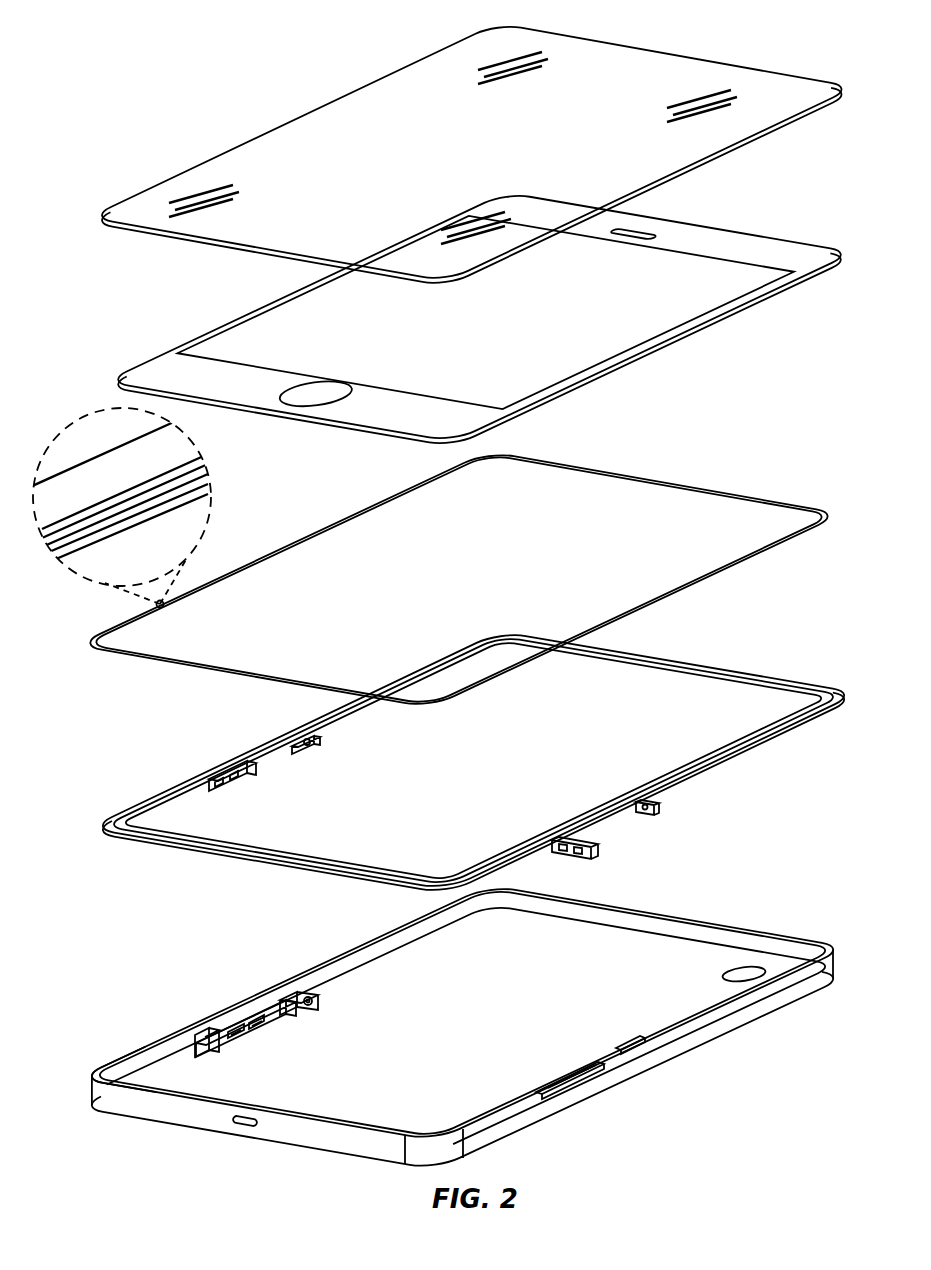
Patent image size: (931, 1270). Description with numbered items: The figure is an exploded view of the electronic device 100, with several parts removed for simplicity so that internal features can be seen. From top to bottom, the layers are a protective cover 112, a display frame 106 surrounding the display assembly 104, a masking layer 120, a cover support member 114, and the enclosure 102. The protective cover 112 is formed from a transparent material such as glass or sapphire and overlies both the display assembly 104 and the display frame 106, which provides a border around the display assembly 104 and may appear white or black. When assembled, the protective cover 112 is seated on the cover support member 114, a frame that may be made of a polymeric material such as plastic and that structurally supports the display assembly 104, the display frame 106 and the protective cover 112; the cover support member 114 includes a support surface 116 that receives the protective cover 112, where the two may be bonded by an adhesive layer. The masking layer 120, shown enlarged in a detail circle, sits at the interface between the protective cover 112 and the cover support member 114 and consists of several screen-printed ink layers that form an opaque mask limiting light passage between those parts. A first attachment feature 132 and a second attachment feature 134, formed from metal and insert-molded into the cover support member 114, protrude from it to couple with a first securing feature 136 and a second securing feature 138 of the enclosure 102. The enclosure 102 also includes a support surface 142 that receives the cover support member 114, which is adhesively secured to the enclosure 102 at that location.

The electronic device 100 is at (80, 86).
The enclosure 102 is at (694, 1091).
The display assembly 104 is at (442, 349).
The display frame 106 is at (768, 256).
The protective cover 112 is at (801, 76).
The cover support member 114 is at (718, 668).
The support surface 116 is at (826, 684).
The masking layer 120 is at (93, 446).
The first attachment feature 132 is at (246, 786).
The second attachment feature 134 is at (302, 757).
The first securing feature 136 is at (248, 1040).
The second securing feature 138 is at (312, 1012).
The support surface 142 is at (100, 1060).